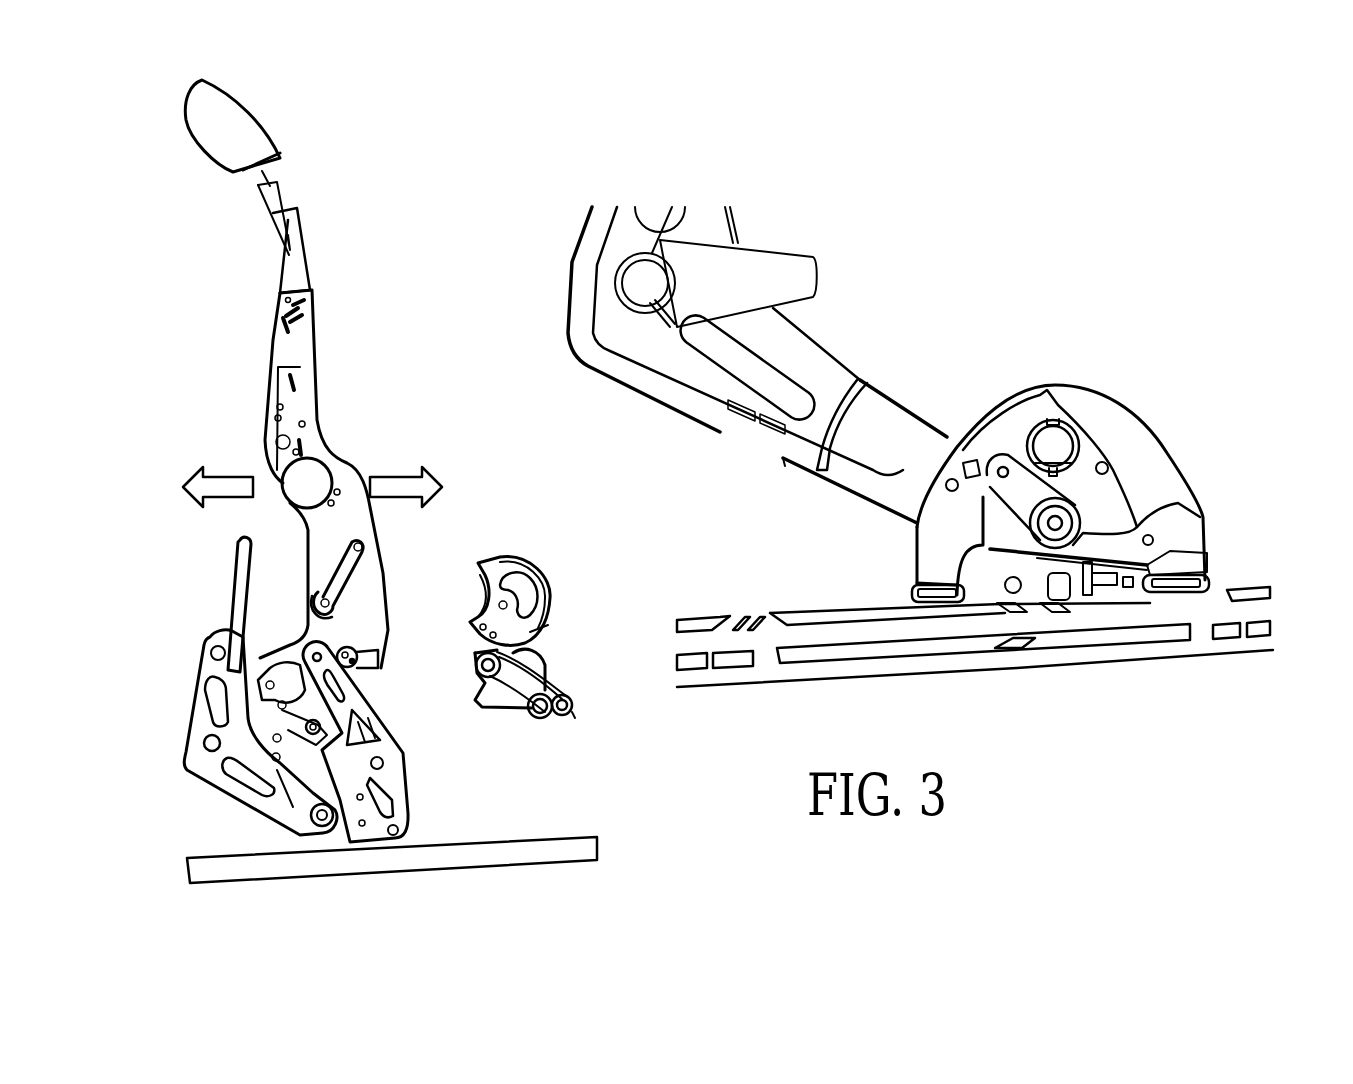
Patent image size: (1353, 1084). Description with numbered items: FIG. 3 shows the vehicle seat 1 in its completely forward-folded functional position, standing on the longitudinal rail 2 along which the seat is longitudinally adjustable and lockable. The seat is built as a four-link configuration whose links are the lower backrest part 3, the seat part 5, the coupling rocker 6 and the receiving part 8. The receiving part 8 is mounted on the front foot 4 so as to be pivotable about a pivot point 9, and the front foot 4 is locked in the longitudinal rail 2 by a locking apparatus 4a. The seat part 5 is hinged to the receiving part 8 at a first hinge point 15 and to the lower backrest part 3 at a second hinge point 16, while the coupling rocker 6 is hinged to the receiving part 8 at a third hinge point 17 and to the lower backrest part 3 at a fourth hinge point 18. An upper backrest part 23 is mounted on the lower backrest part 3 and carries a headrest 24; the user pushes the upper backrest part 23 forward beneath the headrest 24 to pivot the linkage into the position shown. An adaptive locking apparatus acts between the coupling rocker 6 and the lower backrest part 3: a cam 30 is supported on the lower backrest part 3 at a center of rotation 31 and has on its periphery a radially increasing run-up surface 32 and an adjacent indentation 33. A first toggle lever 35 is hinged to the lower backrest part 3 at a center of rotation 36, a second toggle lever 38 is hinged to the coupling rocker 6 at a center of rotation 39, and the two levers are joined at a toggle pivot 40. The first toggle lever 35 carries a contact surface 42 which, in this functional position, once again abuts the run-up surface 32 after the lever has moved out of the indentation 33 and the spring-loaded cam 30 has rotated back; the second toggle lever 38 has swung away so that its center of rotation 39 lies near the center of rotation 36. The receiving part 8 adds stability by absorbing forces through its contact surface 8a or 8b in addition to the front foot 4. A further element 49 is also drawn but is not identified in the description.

The vehicle seat 1 is at (360, 325).
The longitudinal rail 2 is at (590, 843).
The lower backrest part 3 is at (375, 565).
The front foot 4 is at (1115, 505).
The locking apparatus 4a is at (1110, 563).
The seat part 5 is at (187, 750).
The coupling rocker 6 is at (397, 773).
The receiving part 8 is at (1118, 402).
The contact surface 8a is at (912, 590).
The contact surface 8b is at (1190, 577).
The pivot point 9 is at (1060, 433).
The first hinge point 15 is at (320, 828).
The second hinge point 16 is at (212, 650).
The third hinge point 17 is at (413, 830).
The fourth hinge point 18 is at (327, 645).
The upper backrest part 23 is at (310, 388).
The headrest 24 is at (245, 122).
The cam 30 is at (530, 563).
The center of rotation 31 is at (510, 605).
The run-up surface 32 is at (545, 625).
The indentation 33 is at (475, 585).
The first toggle lever 35 is at (547, 688).
The center of rotation 36 is at (578, 712).
The second toggle lever 38 is at (520, 716).
The center of rotation 39 is at (545, 720).
The toggle pivot 40 is at (475, 670).
The contact surface 42 is at (478, 644).
The detent mechanism 49 is at (273, 677).